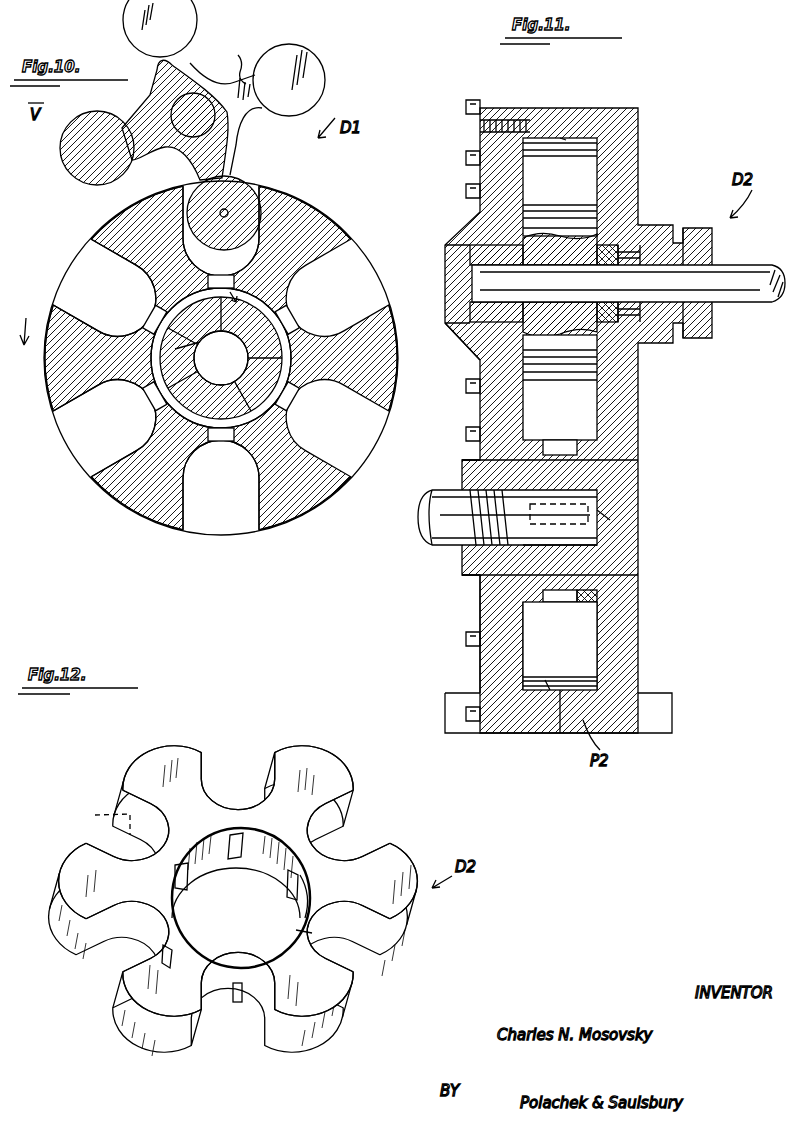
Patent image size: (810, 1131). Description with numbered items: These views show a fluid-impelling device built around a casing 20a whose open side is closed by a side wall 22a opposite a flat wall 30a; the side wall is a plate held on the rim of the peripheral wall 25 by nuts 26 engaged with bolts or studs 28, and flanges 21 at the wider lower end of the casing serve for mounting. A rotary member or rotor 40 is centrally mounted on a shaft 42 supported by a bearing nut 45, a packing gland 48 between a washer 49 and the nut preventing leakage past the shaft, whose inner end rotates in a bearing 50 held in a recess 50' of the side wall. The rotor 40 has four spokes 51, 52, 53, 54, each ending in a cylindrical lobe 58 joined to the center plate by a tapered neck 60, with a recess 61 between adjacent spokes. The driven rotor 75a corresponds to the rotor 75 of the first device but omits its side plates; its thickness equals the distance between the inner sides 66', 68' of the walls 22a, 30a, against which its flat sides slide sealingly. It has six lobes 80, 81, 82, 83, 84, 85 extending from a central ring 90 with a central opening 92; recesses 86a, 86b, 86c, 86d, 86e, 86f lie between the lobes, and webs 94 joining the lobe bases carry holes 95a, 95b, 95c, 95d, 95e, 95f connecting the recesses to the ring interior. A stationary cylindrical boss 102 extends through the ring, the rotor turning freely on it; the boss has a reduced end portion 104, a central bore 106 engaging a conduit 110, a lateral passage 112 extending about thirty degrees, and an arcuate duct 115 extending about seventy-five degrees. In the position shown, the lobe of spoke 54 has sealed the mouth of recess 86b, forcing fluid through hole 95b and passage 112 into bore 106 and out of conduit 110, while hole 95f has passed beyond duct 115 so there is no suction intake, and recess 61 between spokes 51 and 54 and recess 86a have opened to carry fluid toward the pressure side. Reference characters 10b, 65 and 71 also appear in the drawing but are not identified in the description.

In FIG. 11, the bore 10b is at (580, 545).
In FIG. 11, the casing 20a is at (653, 480).
In FIG. 11, the flanges 21 is at (648, 740).
In FIG. 11, the side wall 22a is at (490, 605).
In FIG. 11, the peripheral wall 25 is at (565, 740).
In FIG. 11, the nuts 26 is at (466, 106).
In FIG. 11, the bolts or studs 28 is at (466, 126).
In FIG. 11, the flat wall 30a is at (612, 525).
In FIG. 11, the rotary member 40 is at (500, 350).
In FIG. 11, the shaft 42 is at (762, 300).
In FIG. 11, the bearing nut 45 is at (712, 250).
In FIG. 11, the packing gland 48 is at (632, 245).
In FIG. 11, the washer 49 is at (605, 250).
In FIG. 11, the bearing 50 is at (470, 283).
In FIG. 11, the recess 50' is at (516, 270).
In FIG. 10, the spoke 51 is at (83, 191).
In FIG. 11, the spoke 51 is at (582, 402).
In FIG. 10, the spoke 52 is at (147, 66).
In FIG. 10, the spoke 53 is at (331, 62).
In FIG. 11, the spoke 53 is at (572, 168).
In FIG. 10, the spoke 54 is at (263, 187).
In FIG. 10, the cylindrical lobe 58 is at (228, 205).
In FIG. 10, the neck 60 is at (180, 53).
In FIG. 10, the recess 61 is at (177, 161).
In FIG. 12, the surface 65 is at (100, 820).
In FIG. 11, the inner side 66' is at (485, 646).
In FIG. 11, the inner side 68' is at (641, 646).
In FIG. 11, the bore 71 is at (560, 138).
In FIG. 10, the rotor 75 is at (378, 470).
In FIG. 11, the rotor 75a is at (600, 612).
In FIG. 12, the rotor 75a is at (207, 738).
In FIG. 10, the lobe 80 is at (140, 245).
In FIG. 12, the lobe 80 is at (318, 762).
In FIG. 10, the lobe 81 is at (60, 365).
In FIG. 12, the lobe 81 is at (402, 870).
In FIG. 10, the lobe 82 is at (130, 505).
In FIG. 12, the lobe 82 is at (322, 1012).
In FIG. 10, the lobe 83 is at (292, 500).
In FIG. 12, the lobe 83 is at (170, 1068).
In FIG. 10, the lobe 84 is at (370, 360).
In FIG. 12, the lobe 84 is at (70, 960).
In FIG. 10, the lobe 85 is at (318, 230).
In FIG. 10, the recess 86a is at (92, 283).
In FIG. 12, the recess 86a is at (248, 767).
In FIG. 10, the recess 86b is at (268, 240).
In FIG. 12, the recess 86b is at (369, 823).
In FIG. 12, the recess 86c is at (386, 1013).
In FIG. 10, the recess 86d is at (223, 513).
In FIG. 11, the recess 86d is at (549, 693).
In FIG. 12, the recess 86d is at (243, 1061).
In FIG. 12, the recess 86e is at (102, 1016).
In FIG. 10, the recess 86f is at (85, 436).
In FIG. 12, the recess 86f is at (89, 844).
In FIG. 11, the central ring 90 is at (590, 590).
In FIG. 12, the central ring 90 is at (215, 870).
In FIG. 12, the central opening 92 is at (205, 850).
In FIG. 12, the webs 94 is at (312, 880).
In FIG. 10, the hole 95a is at (150, 312).
In FIG. 11, the hole 95a is at (588, 630).
In FIG. 12, the hole 95a is at (236, 858).
In FIG. 10, the hole 95b is at (249, 278).
In FIG. 12, the hole 95b is at (284, 892).
In FIG. 12, the hole 95c is at (312, 950).
In FIG. 12, the hole 95d is at (237, 983).
In FIG. 12, the hole 95e is at (160, 958).
In FIG. 10, the hole 95f is at (145, 410).
In FIG. 12, the hole 95f is at (172, 870).
In FIG. 10, the cylindrical boss 102 is at (300, 402).
In FIG. 11, the end portion 104 is at (478, 560).
In FIG. 10, the central bore 106 is at (221, 358).
In FIG. 11, the conduit 110 is at (446, 535).
In FIG. 10, the lateral passage 112 is at (238, 323).
In FIG. 10, the arcuate duct 115 is at (165, 335).
In FIG. 11, the arcuate duct 115 is at (555, 515).